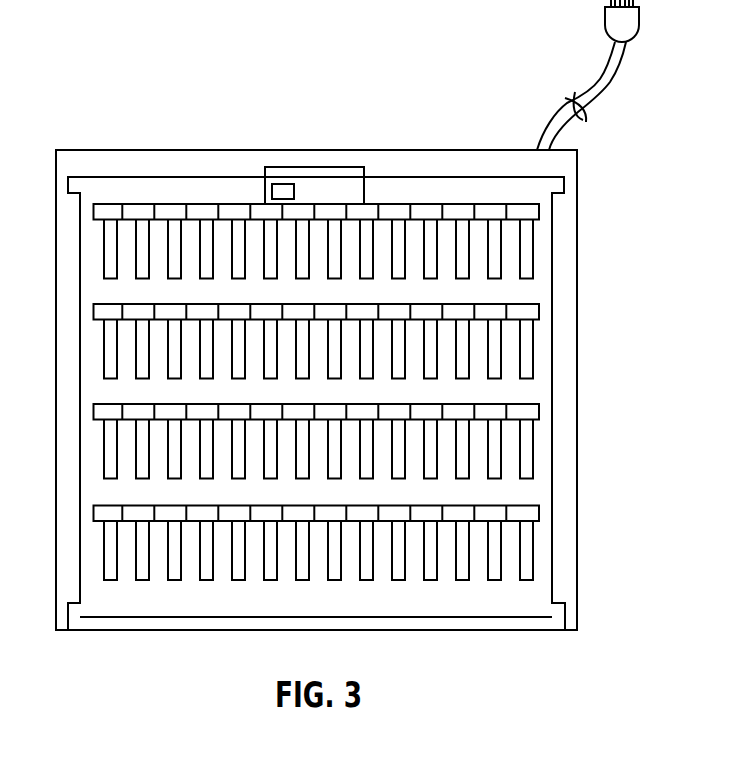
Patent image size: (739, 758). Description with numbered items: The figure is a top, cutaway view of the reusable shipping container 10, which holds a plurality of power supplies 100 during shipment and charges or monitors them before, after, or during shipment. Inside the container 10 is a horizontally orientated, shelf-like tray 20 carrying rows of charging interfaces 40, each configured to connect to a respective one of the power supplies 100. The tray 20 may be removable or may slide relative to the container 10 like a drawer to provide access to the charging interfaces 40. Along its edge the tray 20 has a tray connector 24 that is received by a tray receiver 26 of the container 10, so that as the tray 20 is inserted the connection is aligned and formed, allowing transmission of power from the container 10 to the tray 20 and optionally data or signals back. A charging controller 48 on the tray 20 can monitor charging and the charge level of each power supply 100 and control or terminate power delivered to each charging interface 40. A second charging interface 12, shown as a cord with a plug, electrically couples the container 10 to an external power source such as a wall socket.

The shipping container 10 is at (206, 151).
The second charging interface 12 is at (603, 77).
The tray 20 is at (502, 622).
The tray connector 24 is at (348, 190).
The tray receiver 26 is at (342, 144).
The charging interface 40 is at (167, 204).
The charging controller 48 is at (283, 184).
The power supply 100 is at (493, 269).